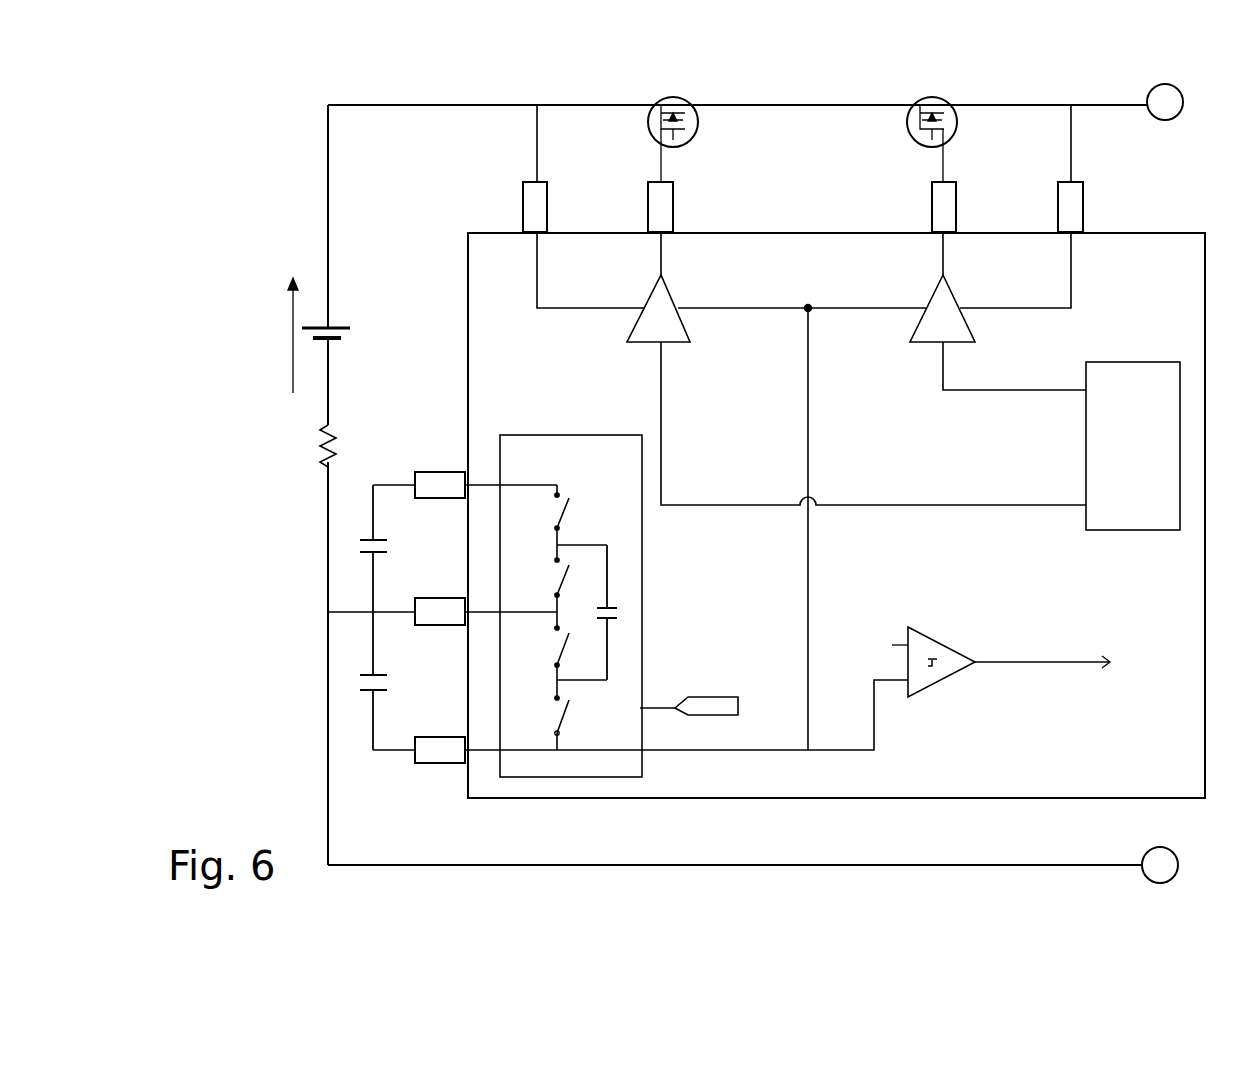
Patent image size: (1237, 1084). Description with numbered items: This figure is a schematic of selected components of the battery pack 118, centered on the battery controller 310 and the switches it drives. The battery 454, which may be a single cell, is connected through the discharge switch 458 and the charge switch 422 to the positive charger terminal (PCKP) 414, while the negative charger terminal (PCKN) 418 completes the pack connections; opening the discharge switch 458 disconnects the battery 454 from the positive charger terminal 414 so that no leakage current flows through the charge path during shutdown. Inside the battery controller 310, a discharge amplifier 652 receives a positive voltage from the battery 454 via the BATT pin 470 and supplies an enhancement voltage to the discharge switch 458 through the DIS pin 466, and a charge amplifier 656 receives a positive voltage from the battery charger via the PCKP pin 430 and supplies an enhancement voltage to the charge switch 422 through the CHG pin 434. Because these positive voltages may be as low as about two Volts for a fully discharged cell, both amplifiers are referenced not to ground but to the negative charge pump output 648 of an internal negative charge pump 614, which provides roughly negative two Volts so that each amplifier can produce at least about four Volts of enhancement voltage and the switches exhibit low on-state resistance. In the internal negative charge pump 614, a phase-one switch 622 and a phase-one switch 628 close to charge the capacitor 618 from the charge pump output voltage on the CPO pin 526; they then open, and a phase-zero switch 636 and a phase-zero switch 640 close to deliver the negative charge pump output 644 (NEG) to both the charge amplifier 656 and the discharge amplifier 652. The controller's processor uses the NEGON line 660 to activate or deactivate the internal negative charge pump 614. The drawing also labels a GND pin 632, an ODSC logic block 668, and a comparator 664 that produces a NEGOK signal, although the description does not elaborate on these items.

The battery pack 118 is at (216, 120).
The battery 454 is at (262, 343).
The discharge switch 458 is at (697, 133).
The charge switch 422 is at (957, 128).
The positive charger terminal (PCKP) 414 is at (1170, 120).
The negative charger terminal (PCKN) 418 is at (1168, 881).
The battery controller 310 is at (972, 803).
The BATT pin 470 is at (546, 235).
The DIS pin 466 is at (667, 235).
The CHG pin 434 is at (950, 235).
The PCKP pin 430 is at (1083, 235).
The discharge amplifier 652 is at (678, 350).
The charge amplifier 656 is at (930, 345).
The negative charge pump output 648 is at (808, 300).
The ODSC logic 668 is at (1085, 436).
The CPO pin 526 is at (450, 499).
The GND pin 632 is at (445, 626).
The negative charge pump output (NEG) 644 is at (442, 764).
The internal negative charge pump 614 is at (610, 606).
The phase 1 (PH1) switch 622 is at (540, 520).
The phase 0 (PH0) switch 636 is at (548, 580).
The phase 1 (PH1) switch 628 is at (540, 656).
The phase 0 (PH0) switch 640 is at (546, 716).
The capacitor 618 is at (598, 622).
The NEGON line 660 is at (718, 716).
The NEGOK comparator 664 is at (940, 678).